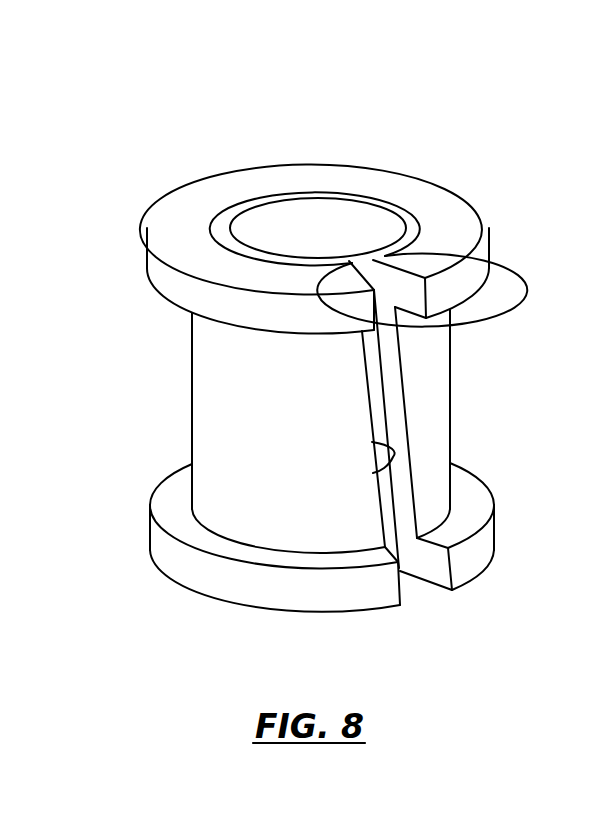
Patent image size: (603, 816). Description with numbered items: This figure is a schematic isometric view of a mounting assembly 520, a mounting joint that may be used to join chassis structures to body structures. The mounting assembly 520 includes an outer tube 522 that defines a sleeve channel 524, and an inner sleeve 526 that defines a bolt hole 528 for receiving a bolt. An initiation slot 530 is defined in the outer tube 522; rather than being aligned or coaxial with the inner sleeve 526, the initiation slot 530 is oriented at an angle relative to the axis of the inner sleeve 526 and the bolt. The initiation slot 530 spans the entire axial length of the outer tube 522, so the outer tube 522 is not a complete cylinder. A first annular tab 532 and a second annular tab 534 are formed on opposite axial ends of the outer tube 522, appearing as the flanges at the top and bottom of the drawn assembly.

The mounting assembly 520 is at (518, 70).
The outer tube 522 is at (422, 435).
The sleeve channel 524 is at (234, 208).
The inner sleeve 526 is at (408, 218).
The bolt hole 528 is at (305, 210).
The initiation slot 530 is at (386, 301).
The first annular tab 532 is at (165, 228).
The second annular tab 534 is at (482, 550).